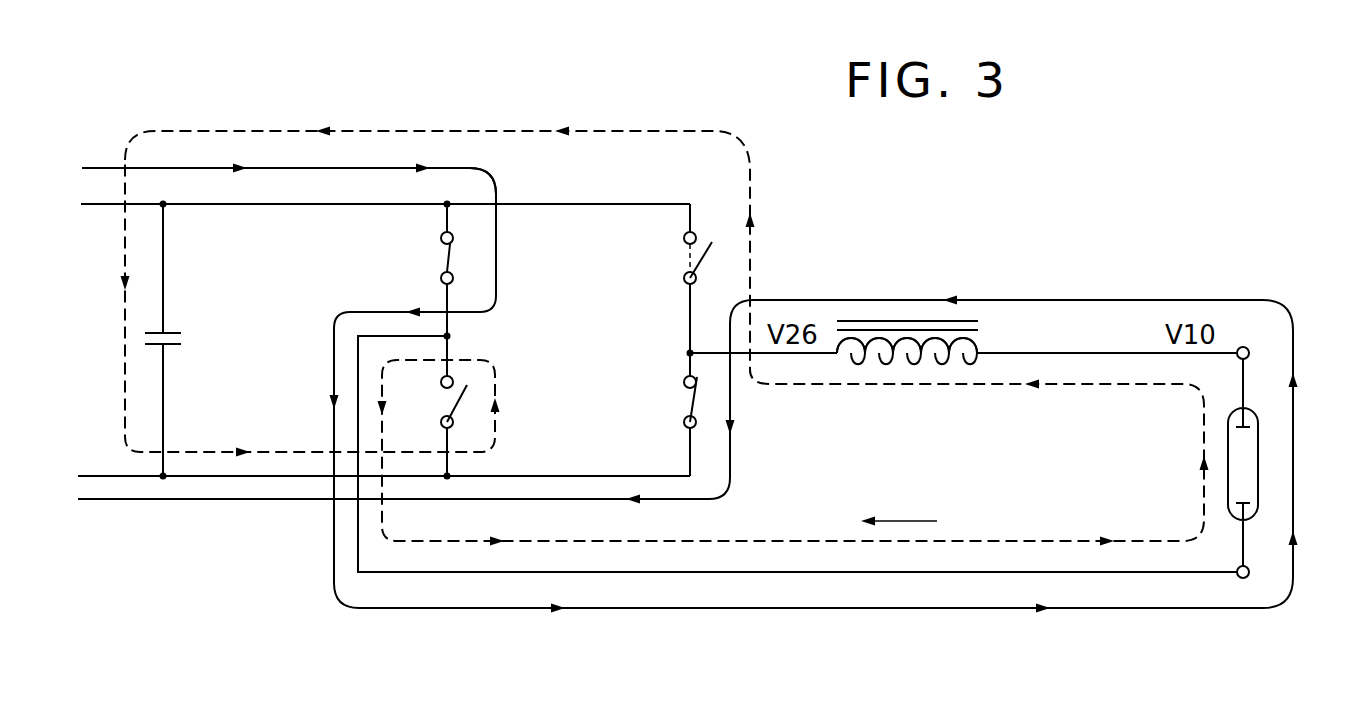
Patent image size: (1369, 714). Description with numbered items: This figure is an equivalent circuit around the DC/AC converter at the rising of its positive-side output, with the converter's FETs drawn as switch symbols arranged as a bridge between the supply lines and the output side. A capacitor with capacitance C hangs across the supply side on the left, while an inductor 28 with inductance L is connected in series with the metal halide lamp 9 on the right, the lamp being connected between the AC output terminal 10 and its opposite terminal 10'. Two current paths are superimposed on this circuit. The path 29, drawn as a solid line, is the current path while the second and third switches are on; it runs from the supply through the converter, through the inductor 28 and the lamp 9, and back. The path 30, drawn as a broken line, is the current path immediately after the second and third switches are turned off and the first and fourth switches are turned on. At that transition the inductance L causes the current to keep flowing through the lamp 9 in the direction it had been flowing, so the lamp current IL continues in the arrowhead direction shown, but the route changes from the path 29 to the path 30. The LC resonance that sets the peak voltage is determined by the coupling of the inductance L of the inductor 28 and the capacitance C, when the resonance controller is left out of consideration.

The path 30 is at (622, 128).
The path 29 is at (496, 186).
The inductor 28 is at (923, 362).
The AC output terminal 10 is at (1291, 313).
The lamp electrode terminal 10' is at (1237, 624).
The metal halide lamp 9 is at (1258, 444).
The capacitance C is at (174, 340).
The inductance L is at (963, 340).
The lamp current IL is at (917, 521).